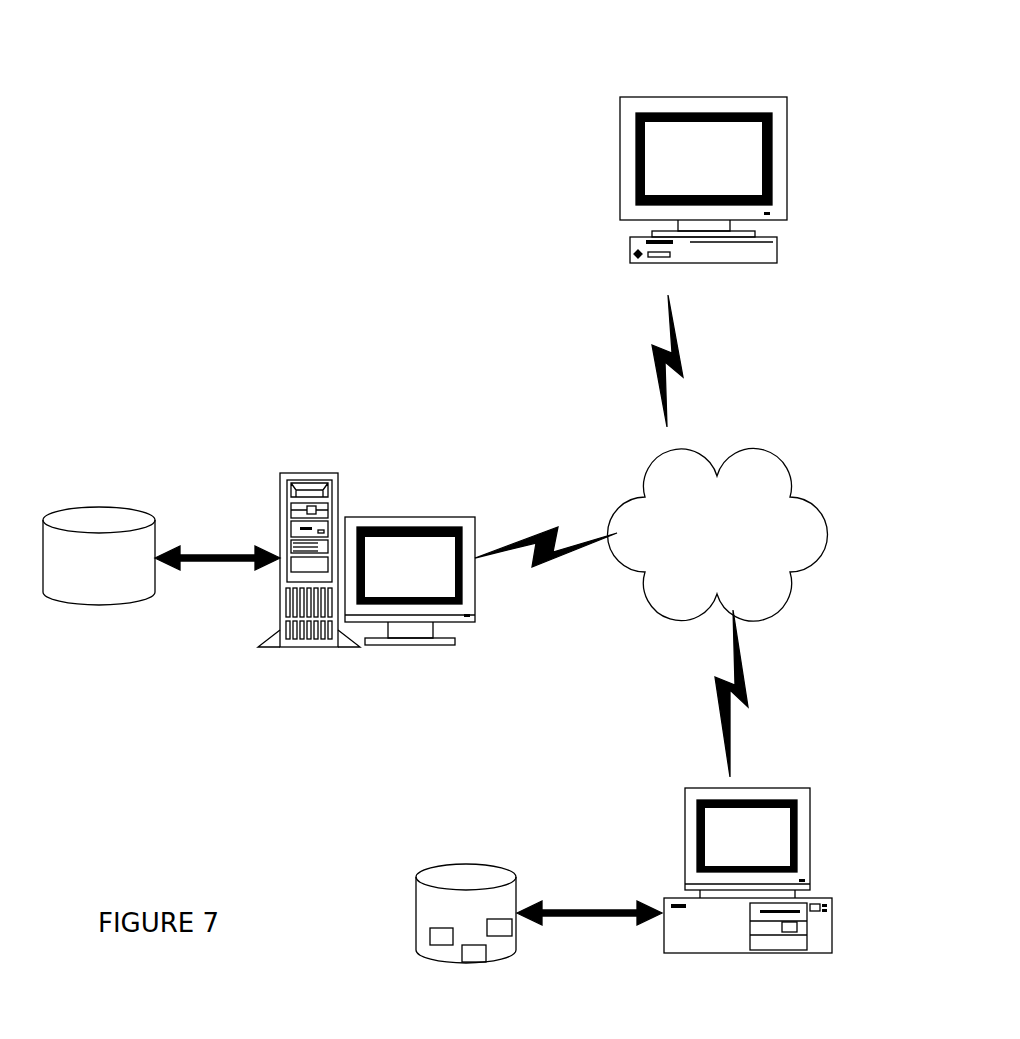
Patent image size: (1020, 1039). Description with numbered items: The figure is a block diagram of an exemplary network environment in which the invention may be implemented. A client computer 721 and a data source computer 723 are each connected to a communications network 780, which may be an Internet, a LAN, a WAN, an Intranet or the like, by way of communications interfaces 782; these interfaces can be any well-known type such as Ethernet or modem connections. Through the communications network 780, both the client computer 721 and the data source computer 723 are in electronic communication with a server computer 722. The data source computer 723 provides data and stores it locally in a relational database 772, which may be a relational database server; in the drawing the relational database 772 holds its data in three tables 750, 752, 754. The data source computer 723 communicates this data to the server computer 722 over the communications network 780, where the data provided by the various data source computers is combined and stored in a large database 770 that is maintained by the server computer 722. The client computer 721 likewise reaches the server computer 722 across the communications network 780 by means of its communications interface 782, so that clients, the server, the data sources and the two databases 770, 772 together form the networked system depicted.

The client computer 721 is at (704, 97).
The server computer 722 is at (300, 473).
The data source computer 723 is at (766, 790).
The database 770 is at (100, 505).
The relational database 772 is at (463, 863).
The table 750 is at (430, 937).
The table 752 is at (470, 962).
The table 754 is at (500, 936).
The communications network 780 is at (687, 459).
The communications interface 782 is at (650, 360).